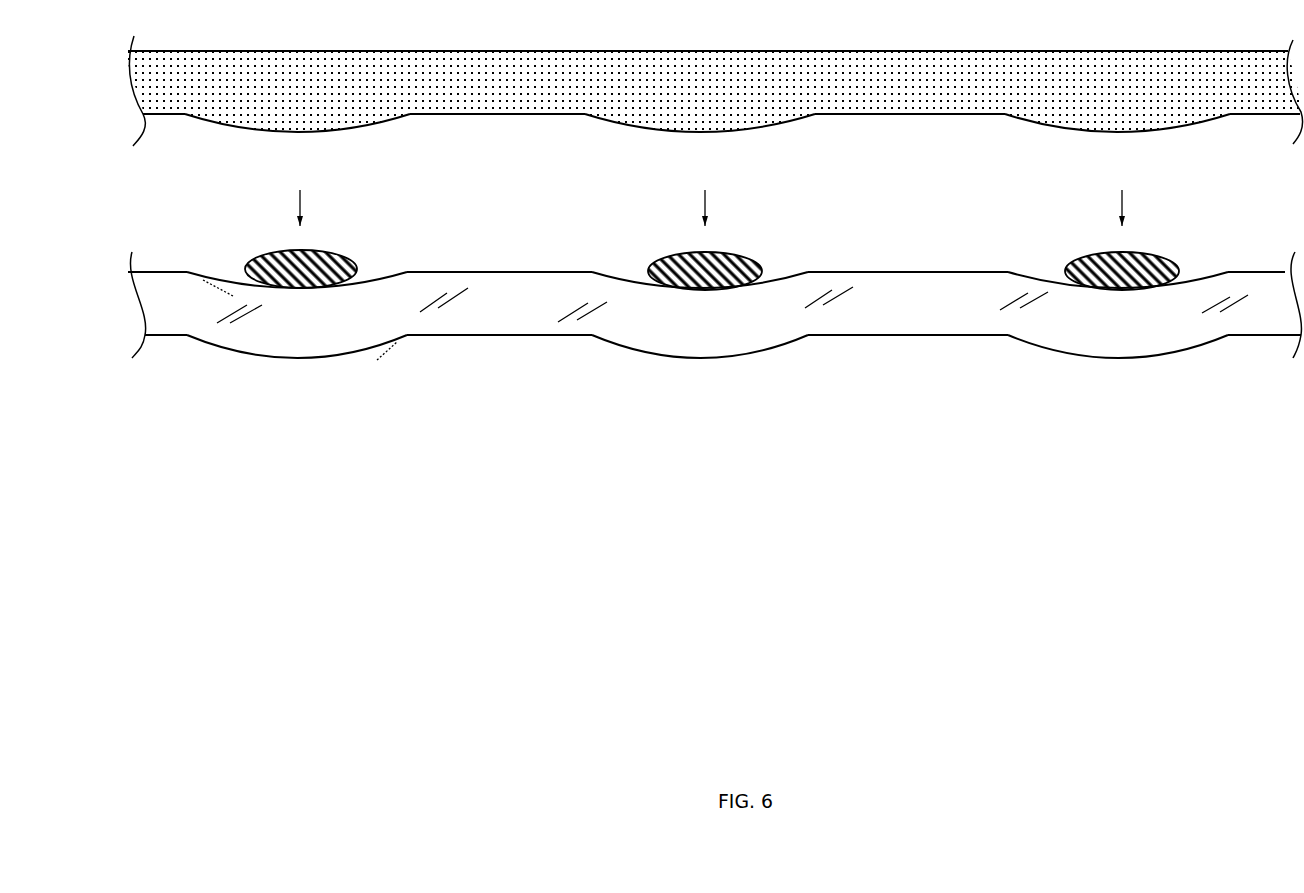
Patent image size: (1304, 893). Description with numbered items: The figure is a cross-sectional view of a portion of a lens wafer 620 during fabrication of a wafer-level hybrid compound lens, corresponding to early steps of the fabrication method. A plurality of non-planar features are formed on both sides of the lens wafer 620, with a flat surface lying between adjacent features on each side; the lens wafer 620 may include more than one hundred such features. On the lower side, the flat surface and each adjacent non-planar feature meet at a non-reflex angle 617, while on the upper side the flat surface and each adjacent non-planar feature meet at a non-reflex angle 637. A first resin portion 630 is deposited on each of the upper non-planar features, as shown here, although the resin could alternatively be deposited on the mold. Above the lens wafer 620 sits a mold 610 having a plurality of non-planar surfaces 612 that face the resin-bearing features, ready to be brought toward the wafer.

The mold 610 is at (755, 102).
The non-planar surfaces 612 is at (262, 135).
The lens wafer 620 is at (788, 324).
The first resin portion 630 is at (317, 280).
The non-reflex angle 637 is at (218, 297).
The non-reflex angle 617 is at (442, 342).